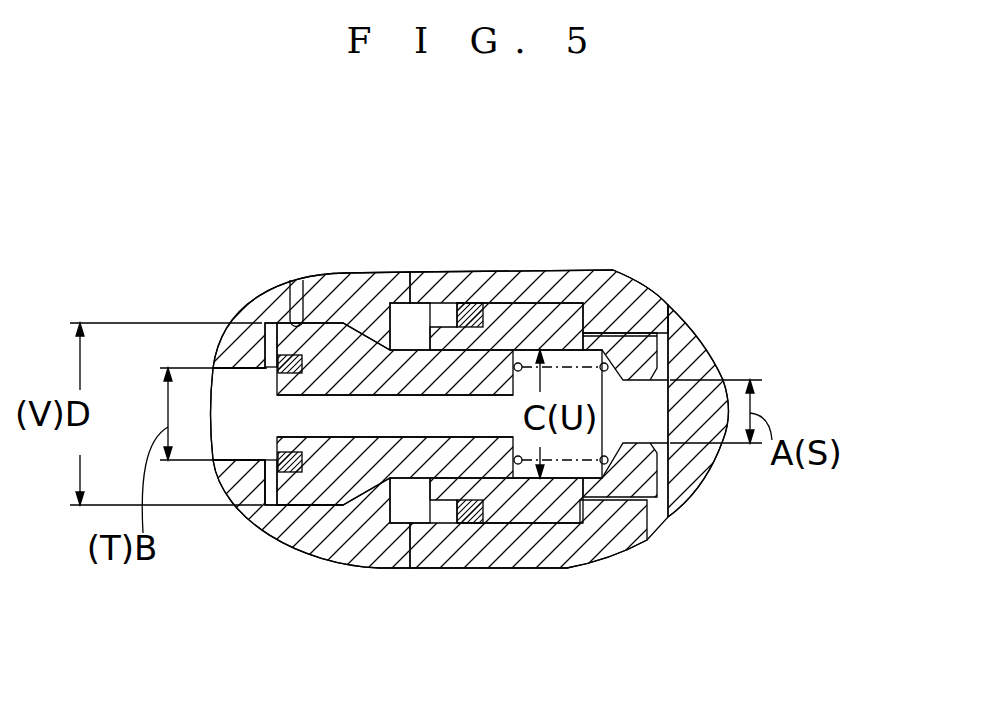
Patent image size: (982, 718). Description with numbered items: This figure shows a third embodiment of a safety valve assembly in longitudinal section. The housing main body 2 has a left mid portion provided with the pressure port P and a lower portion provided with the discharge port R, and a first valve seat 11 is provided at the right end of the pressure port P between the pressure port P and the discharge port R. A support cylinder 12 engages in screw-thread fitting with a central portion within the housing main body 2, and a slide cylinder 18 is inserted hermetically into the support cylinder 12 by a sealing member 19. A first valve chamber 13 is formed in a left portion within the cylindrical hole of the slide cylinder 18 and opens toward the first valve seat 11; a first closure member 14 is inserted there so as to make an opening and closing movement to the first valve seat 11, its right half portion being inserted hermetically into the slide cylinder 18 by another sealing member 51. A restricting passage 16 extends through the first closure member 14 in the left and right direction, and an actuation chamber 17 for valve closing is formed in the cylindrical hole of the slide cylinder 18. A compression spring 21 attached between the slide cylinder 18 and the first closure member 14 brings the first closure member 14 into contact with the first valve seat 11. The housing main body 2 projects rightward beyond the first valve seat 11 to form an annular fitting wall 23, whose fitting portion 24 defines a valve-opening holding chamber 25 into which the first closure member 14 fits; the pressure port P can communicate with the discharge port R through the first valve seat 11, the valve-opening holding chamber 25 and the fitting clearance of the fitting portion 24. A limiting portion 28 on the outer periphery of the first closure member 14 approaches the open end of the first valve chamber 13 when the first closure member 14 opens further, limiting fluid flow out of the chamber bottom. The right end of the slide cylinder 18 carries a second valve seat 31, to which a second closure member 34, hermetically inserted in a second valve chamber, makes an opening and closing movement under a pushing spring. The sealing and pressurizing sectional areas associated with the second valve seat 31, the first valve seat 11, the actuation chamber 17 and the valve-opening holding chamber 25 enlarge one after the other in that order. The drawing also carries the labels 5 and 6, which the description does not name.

The housing main body 2 is at (558, 566).
The spool 5 is at (348, 284).
The valve 6 is at (719, 300).
The first valve seat 11 is at (262, 363).
The support cylinder 12 is at (563, 285).
The first valve chamber 13 is at (402, 340).
The first closure member 14 is at (327, 506).
The restricting passage 16 is at (348, 425).
The actuation chamber for valve closing 17 is at (572, 527).
The slide cylinder 18 is at (497, 514).
The sealing member 19 is at (461, 512).
The compression spring 21 is at (523, 524).
The annular fitting wall 23 is at (290, 333).
The fitting portion 24 is at (291, 280).
The valve-opening holding chamber 25 is at (280, 318).
The limiting portion 28 is at (386, 332).
The second valve seat 31 is at (660, 452).
The second closure member 34 is at (703, 462).
The sealing member 51 is at (412, 524).
The pressure port P is at (236, 450).
The discharge port R is at (300, 515).